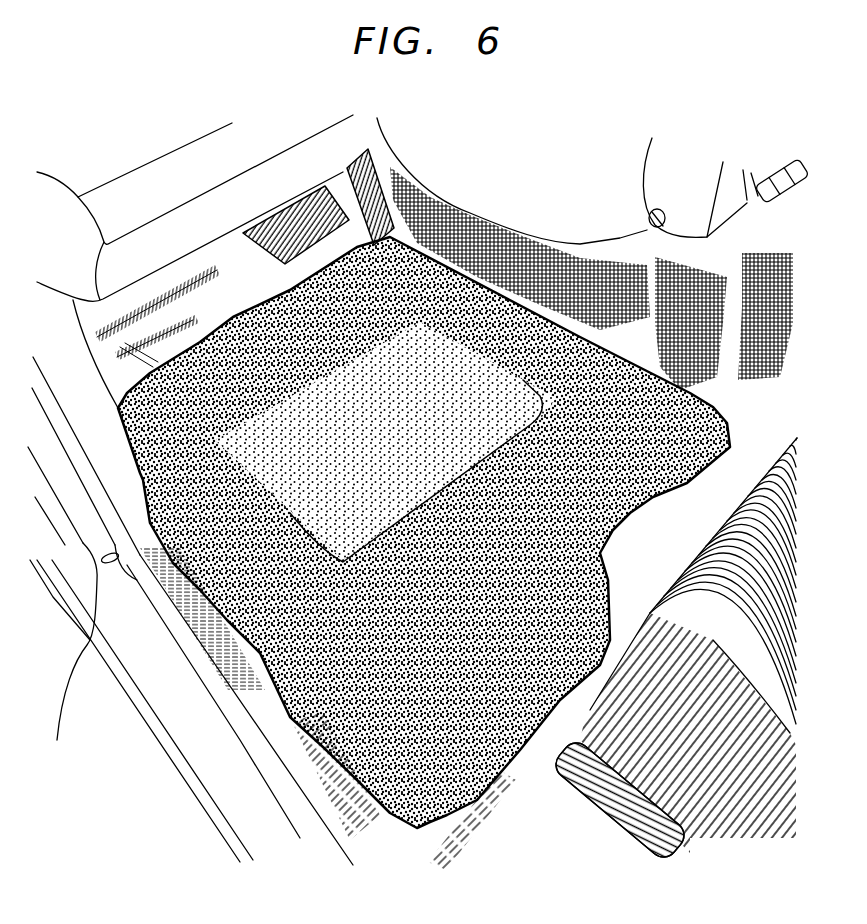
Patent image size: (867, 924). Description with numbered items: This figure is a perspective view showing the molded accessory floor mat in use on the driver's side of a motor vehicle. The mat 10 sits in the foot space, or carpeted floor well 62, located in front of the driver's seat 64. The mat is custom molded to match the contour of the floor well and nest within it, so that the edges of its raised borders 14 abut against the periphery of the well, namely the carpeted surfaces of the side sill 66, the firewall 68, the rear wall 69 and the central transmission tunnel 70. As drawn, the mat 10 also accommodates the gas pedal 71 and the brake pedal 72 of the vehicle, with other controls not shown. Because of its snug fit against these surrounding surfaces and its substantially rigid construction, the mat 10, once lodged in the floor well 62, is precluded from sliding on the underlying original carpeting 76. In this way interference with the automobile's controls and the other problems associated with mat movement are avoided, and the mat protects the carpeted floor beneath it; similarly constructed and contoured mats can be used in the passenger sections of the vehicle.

The mat 10 is at (296, 738).
The raised borders 14 is at (473, 278).
The carpeted floor well 62 is at (530, 549).
The driver's seat 64 is at (573, 760).
The side sill 66 is at (237, 660).
The firewall 68 is at (248, 292).
The rear wall 69 is at (463, 826).
The central tunnel 70 is at (638, 309).
The gas pedal 71 is at (370, 165).
The brake pedal 72 is at (277, 233).
The original carpeting 76 is at (113, 367).